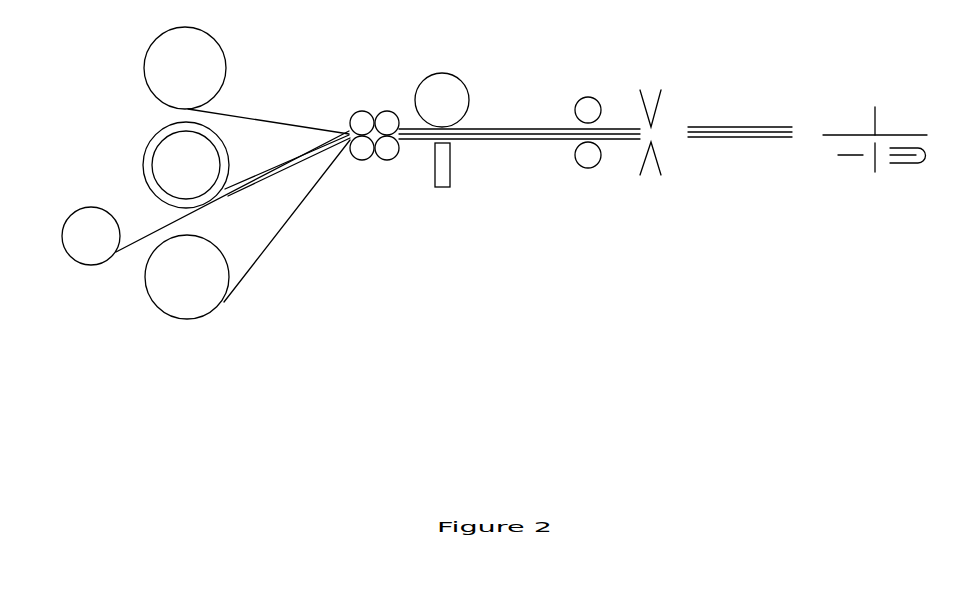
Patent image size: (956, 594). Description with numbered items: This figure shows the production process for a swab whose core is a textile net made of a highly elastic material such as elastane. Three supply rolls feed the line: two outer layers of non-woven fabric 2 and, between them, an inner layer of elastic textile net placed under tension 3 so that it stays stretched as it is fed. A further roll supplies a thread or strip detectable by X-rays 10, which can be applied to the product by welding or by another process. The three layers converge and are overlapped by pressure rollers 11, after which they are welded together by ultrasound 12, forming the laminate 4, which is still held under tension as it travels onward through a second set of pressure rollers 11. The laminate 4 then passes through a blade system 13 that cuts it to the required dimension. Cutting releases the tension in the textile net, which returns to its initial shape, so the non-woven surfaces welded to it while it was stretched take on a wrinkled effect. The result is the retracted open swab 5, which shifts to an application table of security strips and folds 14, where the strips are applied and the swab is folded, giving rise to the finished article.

The outer layers of non-woven fabric 2 is at (155, 70).
The inner layer of elastic textile net placed under tension 3 is at (153, 175).
The thread or strip detectable by X-rays 10 is at (69, 246).
The pressure rollers 11 is at (373, 112).
The ultrasound 12 is at (442, 92).
The laminate 4 is at (535, 128).
The blade system 13 is at (650, 90).
The retracted open swab 5 is at (745, 127).
The application table of security strips and folds 14 is at (875, 100).